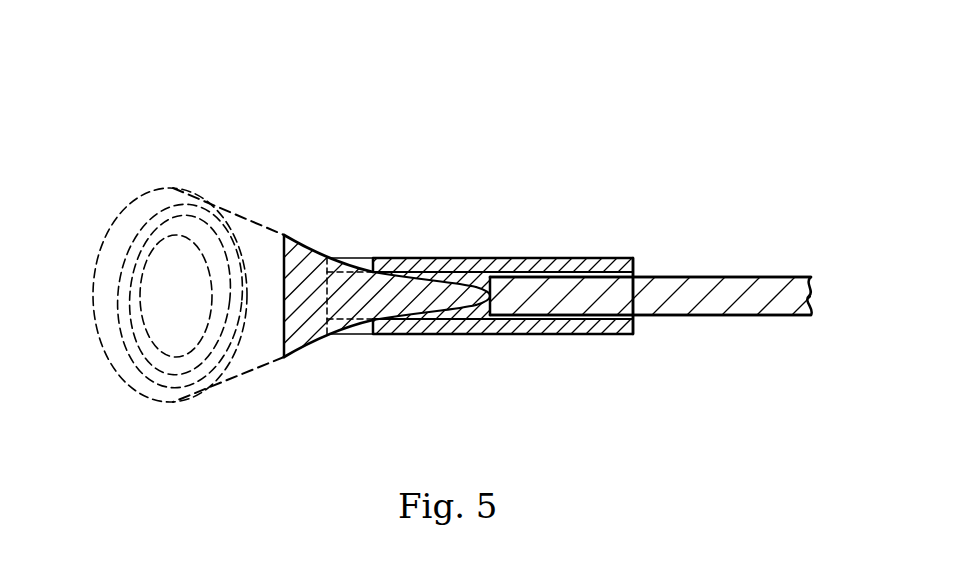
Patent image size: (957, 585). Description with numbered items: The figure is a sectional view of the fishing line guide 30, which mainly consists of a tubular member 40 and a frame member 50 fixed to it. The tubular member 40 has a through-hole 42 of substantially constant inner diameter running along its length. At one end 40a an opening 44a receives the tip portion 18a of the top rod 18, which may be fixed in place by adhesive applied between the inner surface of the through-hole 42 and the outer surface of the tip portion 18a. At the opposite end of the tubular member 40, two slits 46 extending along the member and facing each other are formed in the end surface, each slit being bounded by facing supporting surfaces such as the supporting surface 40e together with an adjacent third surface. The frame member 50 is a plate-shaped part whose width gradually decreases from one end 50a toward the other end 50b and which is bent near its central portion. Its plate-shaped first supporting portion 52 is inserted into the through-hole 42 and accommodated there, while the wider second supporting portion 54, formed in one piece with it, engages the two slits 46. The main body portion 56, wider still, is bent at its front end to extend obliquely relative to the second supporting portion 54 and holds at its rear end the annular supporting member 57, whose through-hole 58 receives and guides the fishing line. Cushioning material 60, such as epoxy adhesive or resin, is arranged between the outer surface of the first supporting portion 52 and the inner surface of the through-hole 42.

The fishing line guide 30 is at (685, 140).
The frame member 50 is at (304, 262).
The one end of the frame member 50a is at (112, 240).
The other end of the frame member 50b is at (471, 282).
The main body portion 56 is at (262, 260).
The annular supporting member 57 is at (217, 240).
The through-hole 58 is at (165, 198).
The tubular member 40 is at (556, 252).
The one end of the tubular member 40a is at (636, 272).
The supporting surface 40e is at (357, 278).
The slits 46 is at (374, 258).
The cushioning material 60 is at (424, 280).
The first supporting portion 52 is at (418, 310).
The second supporting portion 54 is at (343, 300).
The through-hole 42 is at (475, 277).
The opening 44a is at (640, 276).
The top rod 18 is at (713, 308).
The tip portion of the top rod 18a is at (567, 312).